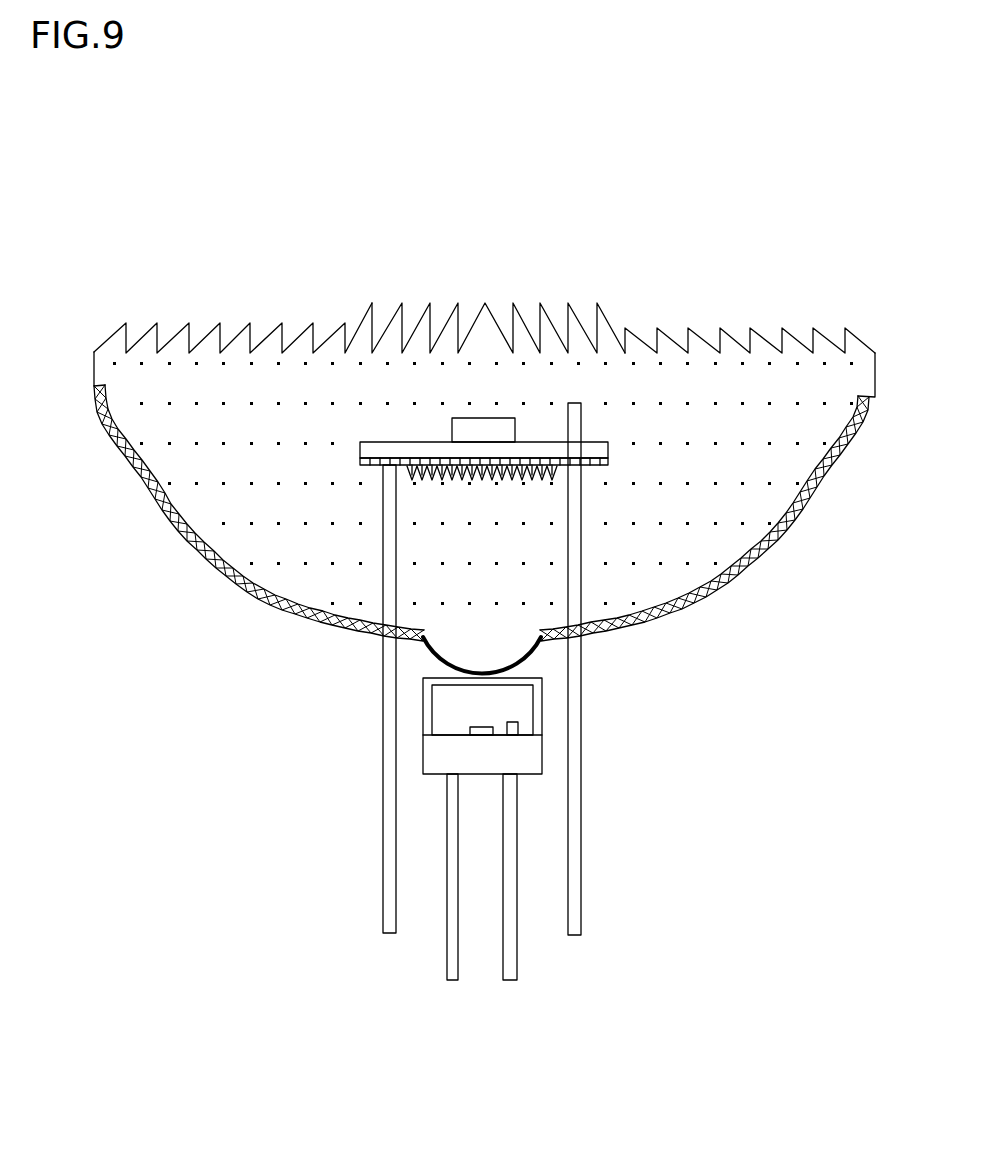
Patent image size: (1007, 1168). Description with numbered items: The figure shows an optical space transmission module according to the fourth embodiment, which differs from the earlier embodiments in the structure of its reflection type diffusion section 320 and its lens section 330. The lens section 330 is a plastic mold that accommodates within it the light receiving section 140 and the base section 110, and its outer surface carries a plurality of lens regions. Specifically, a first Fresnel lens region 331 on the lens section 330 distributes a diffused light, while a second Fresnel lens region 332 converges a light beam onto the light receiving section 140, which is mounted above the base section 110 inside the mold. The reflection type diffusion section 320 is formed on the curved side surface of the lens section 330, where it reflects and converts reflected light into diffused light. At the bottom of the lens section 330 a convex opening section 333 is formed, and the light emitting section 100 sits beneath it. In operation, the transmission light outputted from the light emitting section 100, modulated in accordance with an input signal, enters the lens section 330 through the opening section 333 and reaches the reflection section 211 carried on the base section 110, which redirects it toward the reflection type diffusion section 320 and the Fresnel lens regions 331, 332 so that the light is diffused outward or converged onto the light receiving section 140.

The light emitting section 100 is at (473, 738).
The base section 110 is at (598, 450).
The light receiving section 140 is at (472, 435).
The reflection section 211 is at (458, 485).
The reflection type diffusion section 320 is at (247, 588).
The lens section 330 is at (270, 410).
The first Fresnel lens region 331 is at (712, 333).
The second Fresnel lens region 332 is at (538, 303).
The opening section 333 is at (513, 665).